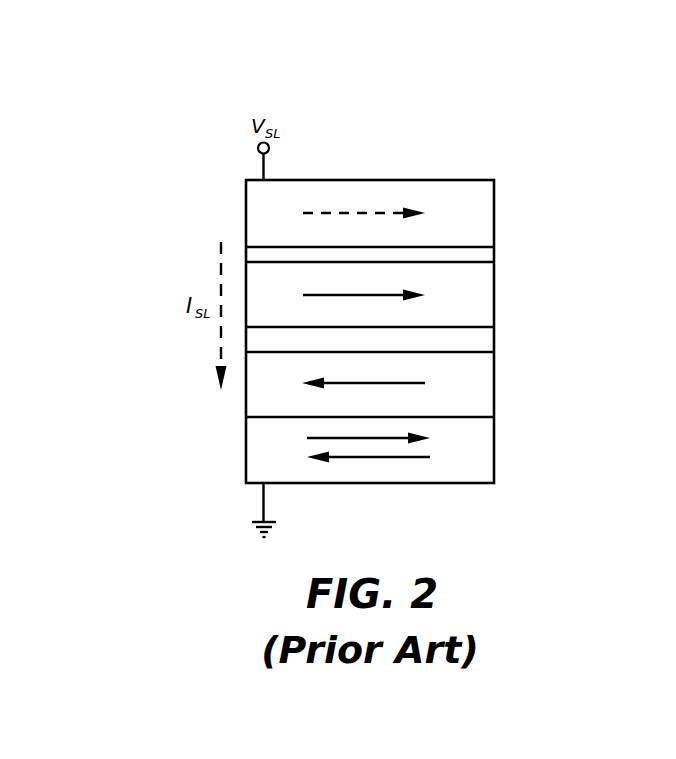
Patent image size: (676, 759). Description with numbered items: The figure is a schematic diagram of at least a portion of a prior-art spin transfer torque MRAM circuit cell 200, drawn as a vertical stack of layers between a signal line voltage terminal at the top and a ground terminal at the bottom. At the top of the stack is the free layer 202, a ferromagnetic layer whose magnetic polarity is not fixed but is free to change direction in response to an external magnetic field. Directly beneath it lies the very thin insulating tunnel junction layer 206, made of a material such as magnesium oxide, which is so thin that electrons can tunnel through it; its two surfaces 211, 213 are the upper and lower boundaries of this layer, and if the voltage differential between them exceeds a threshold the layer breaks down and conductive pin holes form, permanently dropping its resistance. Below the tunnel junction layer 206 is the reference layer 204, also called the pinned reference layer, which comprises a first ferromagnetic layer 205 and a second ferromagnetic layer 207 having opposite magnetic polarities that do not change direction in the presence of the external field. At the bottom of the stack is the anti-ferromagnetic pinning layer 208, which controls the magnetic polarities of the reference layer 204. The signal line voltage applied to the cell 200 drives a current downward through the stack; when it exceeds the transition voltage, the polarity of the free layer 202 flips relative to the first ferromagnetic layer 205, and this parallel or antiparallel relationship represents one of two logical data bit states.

The MRAM circuit cell 200 is at (528, 123).
The free layer 202 is at (370, 217).
The reference layer 204 is at (503, 263).
The first ferromagnetic layer 205 is at (370, 302).
The tunnel junction layer 206 is at (495, 252).
The second ferromagnetic layer 207 is at (370, 384).
The anti-ferromagnetic pinning layer 208 is at (395, 444).
The surface of the tunnel junction layer 211 is at (290, 246).
The surface of the tunnel junction layer 213 is at (272, 258).